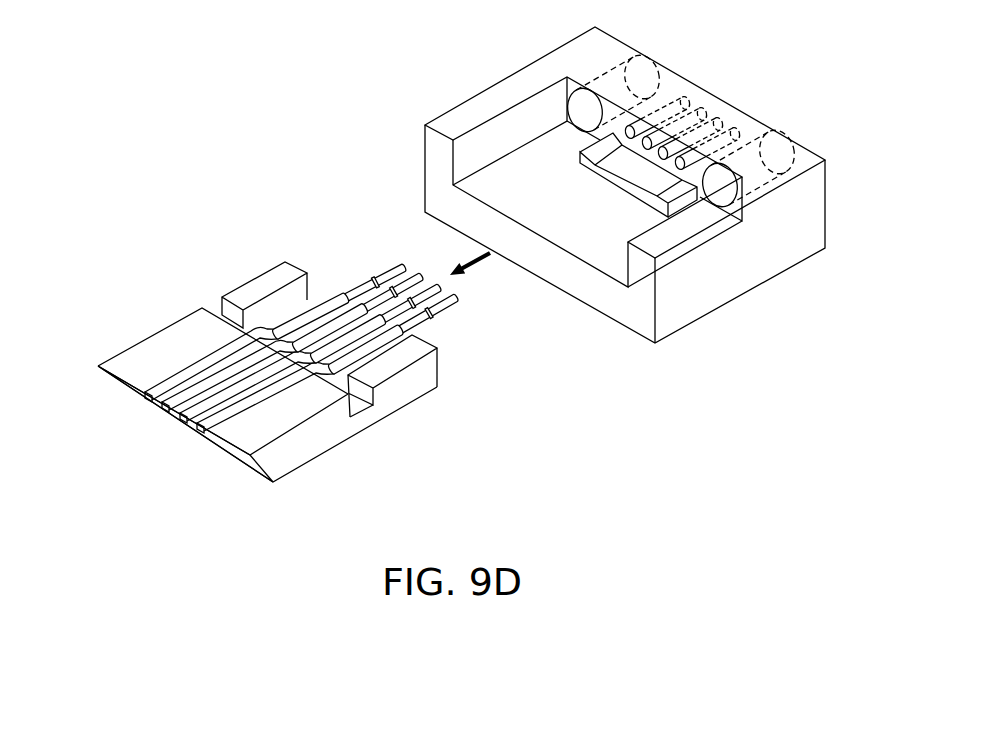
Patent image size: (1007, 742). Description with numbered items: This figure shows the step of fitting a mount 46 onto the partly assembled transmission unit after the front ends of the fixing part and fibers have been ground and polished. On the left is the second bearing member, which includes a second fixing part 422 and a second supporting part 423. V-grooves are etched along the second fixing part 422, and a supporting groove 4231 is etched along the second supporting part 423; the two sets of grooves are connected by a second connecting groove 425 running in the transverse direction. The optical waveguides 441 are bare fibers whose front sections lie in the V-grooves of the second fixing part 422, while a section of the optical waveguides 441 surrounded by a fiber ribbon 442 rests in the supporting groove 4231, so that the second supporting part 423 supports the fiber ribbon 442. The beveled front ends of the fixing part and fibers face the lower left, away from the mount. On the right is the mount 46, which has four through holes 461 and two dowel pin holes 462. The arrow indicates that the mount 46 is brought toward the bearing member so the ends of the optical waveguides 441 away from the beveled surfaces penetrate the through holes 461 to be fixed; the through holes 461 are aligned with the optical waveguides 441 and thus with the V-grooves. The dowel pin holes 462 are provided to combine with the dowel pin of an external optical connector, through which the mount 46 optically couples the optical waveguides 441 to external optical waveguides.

The mount 46 is at (612, 172).
The through holes 461 is at (686, 98).
The dowel pin holes 462 is at (640, 60).
The second fixing part 422 is at (271, 366).
The second supporting part 423 is at (428, 409).
The second connecting groove 425 is at (361, 406).
The supporting groove 4231 is at (273, 314).
The optical waveguides 441 is at (213, 376).
The fiber ribbon 442 is at (335, 292).